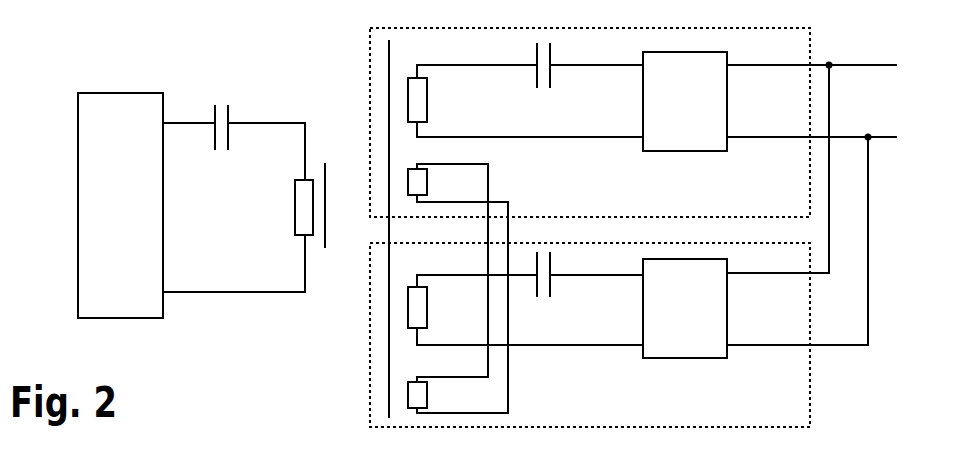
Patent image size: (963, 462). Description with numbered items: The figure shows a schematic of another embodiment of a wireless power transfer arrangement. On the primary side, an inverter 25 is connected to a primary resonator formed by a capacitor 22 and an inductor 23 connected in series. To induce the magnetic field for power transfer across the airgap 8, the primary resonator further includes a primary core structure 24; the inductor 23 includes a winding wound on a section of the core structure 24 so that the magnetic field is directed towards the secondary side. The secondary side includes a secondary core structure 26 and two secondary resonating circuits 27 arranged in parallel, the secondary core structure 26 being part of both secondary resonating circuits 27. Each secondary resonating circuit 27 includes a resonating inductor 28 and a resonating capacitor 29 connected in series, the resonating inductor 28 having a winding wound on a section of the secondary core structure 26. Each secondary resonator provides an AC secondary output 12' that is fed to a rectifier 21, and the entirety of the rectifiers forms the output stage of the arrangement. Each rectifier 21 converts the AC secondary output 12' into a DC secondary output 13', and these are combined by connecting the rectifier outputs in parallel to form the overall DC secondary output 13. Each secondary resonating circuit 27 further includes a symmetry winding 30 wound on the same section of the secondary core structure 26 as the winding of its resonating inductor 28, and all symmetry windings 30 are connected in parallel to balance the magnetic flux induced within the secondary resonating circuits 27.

The inverter 25 is at (120, 205).
The capacitor 22 is at (222, 100).
The inductor 23 is at (295, 210).
The primary core structure 24 is at (325, 158).
The airgap 8 is at (350, 247).
The secondary core structure 26 is at (389, 42).
The secondary resonating circuit 27 is at (812, 42).
The resonating inductor 28 is at (429, 100).
The resonating capacitor 29 is at (541, 92).
The symmetry winding 30 is at (429, 188).
The rectifier 21 is at (685, 205).
The AC secondary output 12' is at (610, 209).
The DC secondary output 13' is at (763, 209).
The overall DC secondary output 13 is at (875, 102).